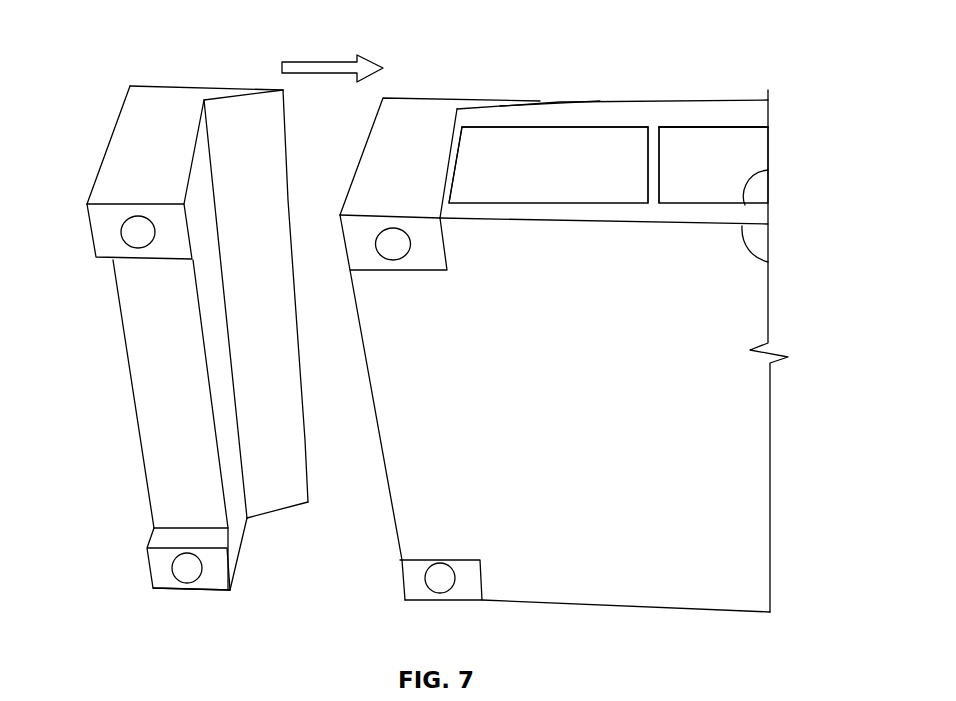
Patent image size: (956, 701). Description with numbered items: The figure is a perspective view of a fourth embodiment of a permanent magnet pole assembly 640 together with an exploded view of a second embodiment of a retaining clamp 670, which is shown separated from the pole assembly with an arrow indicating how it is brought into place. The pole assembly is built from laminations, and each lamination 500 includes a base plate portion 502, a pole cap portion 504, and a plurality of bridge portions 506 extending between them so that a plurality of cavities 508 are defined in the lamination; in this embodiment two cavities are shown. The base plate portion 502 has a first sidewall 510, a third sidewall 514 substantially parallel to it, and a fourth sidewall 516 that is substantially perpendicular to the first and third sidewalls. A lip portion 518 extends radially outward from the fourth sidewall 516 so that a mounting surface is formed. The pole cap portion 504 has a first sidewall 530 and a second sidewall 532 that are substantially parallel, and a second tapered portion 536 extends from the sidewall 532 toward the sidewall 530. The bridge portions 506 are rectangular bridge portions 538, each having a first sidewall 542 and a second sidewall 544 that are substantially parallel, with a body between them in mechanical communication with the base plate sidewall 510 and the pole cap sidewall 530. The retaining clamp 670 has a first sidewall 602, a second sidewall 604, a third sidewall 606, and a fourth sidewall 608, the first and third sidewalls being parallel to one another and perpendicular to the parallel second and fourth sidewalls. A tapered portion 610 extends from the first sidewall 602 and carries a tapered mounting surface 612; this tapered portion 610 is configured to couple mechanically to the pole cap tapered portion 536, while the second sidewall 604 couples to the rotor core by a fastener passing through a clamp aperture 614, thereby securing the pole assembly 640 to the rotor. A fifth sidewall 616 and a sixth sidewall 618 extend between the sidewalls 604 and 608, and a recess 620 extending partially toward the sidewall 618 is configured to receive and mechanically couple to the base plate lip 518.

The lamination 500 is at (782, 242).
The base plate portion 502 is at (782, 210).
The pole cap portion 504 is at (782, 118).
The bridge portions 506 is at (457, 104).
The cavities 508 is at (593, 114).
The first sidewall 510 is at (768, 170).
The third sidewall 514 is at (768, 262).
The fourth sidewall 516 is at (477, 594).
The lip portion 518 is at (393, 540).
The first sidewall 530 is at (578, 118).
The second sidewall 532 is at (643, 100).
The second tapered portion 536 is at (540, 92).
The rectangular bridge portion 538 is at (720, 122).
The first sidewall 542 is at (450, 150).
The second sidewall 544 is at (458, 162).
The first sidewall 602 is at (237, 563).
The second sidewall 604 is at (100, 220).
The third sidewall 606 is at (107, 135).
The fourth sidewall 608 is at (192, 86).
The tapered portion 610 is at (273, 515).
The tapered mounting surface 612 is at (252, 127).
The clamp aperture 614 is at (187, 570).
The fifth sidewall 616 is at (128, 116).
The sixth sidewall 618 is at (218, 598).
The recess 620 is at (122, 411).
The permanent magnet pole assembly 640 is at (592, 341).
The retaining clamp 670 is at (130, 52).